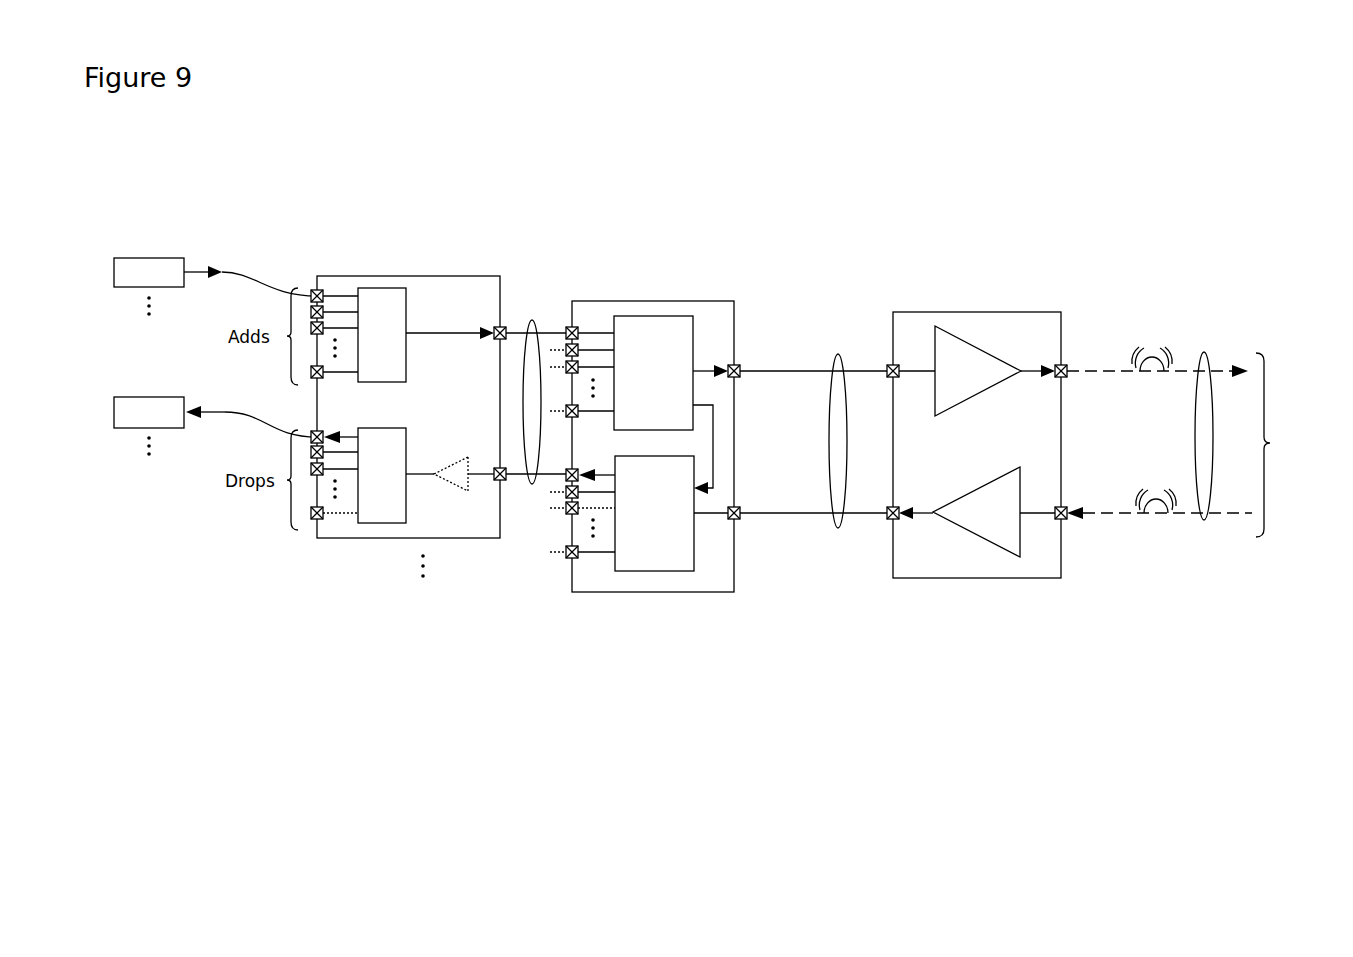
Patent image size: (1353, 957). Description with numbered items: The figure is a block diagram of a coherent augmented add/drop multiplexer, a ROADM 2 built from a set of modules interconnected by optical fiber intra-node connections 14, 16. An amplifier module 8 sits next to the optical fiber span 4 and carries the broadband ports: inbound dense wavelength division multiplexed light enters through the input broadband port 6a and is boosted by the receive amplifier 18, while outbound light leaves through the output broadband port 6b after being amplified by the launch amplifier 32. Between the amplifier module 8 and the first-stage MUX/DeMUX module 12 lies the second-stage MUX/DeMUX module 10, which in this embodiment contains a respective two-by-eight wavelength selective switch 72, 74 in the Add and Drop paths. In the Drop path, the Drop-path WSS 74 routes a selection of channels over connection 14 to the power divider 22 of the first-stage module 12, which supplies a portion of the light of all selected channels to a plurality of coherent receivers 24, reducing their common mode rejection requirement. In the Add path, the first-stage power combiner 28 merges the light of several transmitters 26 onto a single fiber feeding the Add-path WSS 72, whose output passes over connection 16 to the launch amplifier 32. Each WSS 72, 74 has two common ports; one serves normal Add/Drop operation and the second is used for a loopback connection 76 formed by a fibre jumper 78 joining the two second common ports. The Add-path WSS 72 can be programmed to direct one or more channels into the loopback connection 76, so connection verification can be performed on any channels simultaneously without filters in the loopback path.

The ROADM 2 is at (915, 200).
The optical fiber span 4 is at (1204, 352).
The input broadband port 6a is at (1068, 507).
The output broadband port 6b is at (1068, 365).
The amplifier module 8 is at (1033, 312).
The second-stage MUX/DeMUX module 10 is at (713, 301).
The first-stage MUX/DeMUX module 12 is at (467, 276).
The optical fiber intra-node connection 14 is at (533, 320).
The optical fiber intra-node connection 16 is at (838, 355).
The receive amplifier 18 is at (971, 492).
The power divider 22 is at (406, 448).
The coherent receiver 24 is at (139, 397).
The transmitter 26 is at (149, 258).
The first-stage power combiner 28 is at (406, 316).
The launch amplifier 32 is at (989, 354).
The Add-path 2×8 wavelength selective switch 72 is at (621, 373).
The Drop-path 2×8 wavelength selective switch 74 is at (639, 513).
The loopback connection 76 is at (733, 418).
The fibre jumper 78 is at (715, 455).